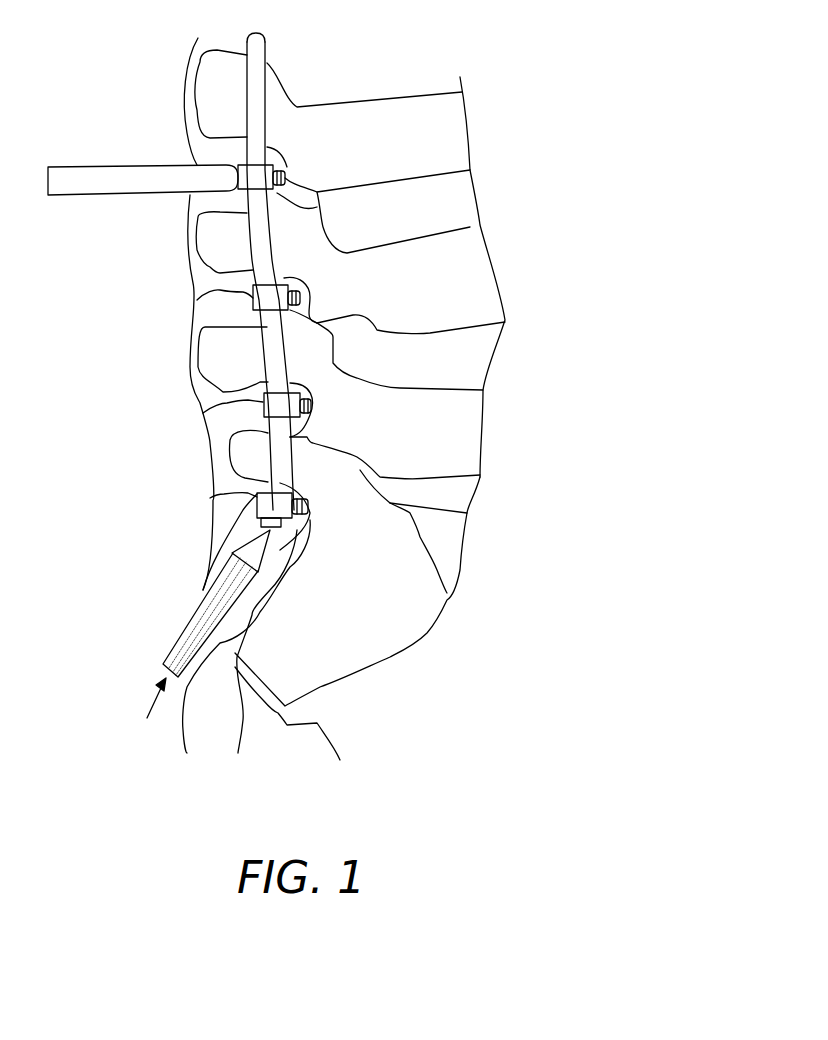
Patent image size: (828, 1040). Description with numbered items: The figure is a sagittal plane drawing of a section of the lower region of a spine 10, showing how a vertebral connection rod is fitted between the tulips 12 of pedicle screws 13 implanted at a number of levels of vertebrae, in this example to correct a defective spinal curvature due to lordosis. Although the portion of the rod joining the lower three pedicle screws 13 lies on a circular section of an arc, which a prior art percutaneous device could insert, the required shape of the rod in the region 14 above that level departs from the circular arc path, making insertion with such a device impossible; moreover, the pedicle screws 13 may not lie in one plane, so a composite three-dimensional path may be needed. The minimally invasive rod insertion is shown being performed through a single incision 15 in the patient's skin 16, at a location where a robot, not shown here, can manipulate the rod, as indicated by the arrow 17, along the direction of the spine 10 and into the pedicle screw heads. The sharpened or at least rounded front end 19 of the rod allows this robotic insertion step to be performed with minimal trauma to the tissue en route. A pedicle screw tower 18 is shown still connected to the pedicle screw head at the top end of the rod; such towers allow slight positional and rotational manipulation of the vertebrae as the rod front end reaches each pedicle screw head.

The spine 10 is at (568, 306).
The tulips 12 is at (197, 300).
The pedicle screws 13 is at (284, 176).
The region 14 is at (177, 203).
The incision 15 is at (208, 600).
The skin 16 is at (207, 551).
The arrow 17 is at (139, 715).
The tower 18 is at (103, 166).
The front end 19 is at (263, 37).